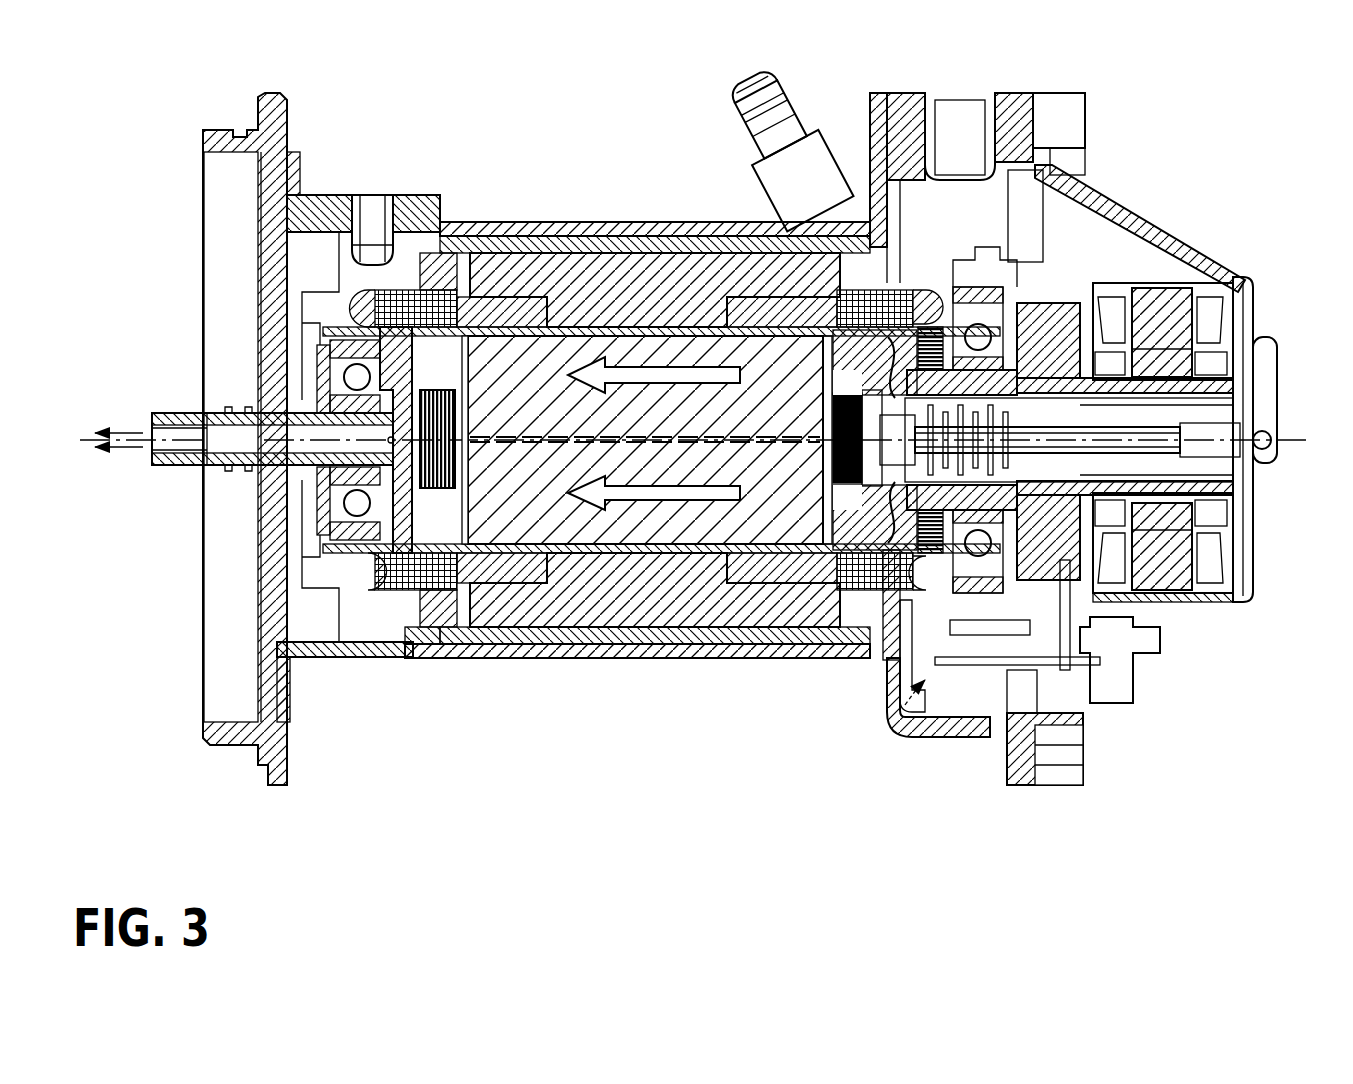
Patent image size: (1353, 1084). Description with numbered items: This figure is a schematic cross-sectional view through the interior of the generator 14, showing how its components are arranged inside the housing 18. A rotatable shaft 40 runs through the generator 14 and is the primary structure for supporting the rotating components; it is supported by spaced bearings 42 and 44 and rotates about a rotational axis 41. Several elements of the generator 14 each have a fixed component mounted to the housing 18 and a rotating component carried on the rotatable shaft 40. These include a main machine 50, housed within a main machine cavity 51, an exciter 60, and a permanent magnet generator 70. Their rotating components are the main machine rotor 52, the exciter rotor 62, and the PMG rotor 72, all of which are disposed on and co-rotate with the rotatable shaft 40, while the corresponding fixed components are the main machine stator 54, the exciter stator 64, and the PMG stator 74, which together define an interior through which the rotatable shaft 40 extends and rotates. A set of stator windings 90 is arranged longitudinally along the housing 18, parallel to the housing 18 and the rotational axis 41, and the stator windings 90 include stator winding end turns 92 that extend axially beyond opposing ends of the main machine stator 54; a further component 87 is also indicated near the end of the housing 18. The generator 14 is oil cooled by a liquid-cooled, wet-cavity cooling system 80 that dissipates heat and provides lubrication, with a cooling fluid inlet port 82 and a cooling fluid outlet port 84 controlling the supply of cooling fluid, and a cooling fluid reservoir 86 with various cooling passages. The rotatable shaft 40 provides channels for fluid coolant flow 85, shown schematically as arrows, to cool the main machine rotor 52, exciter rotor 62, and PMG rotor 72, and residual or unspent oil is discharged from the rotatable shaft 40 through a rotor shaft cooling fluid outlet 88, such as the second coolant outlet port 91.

The generator 14 is at (472, 100).
The housing 18 is at (492, 230).
The rotatable shaft 40 is at (233, 485).
The rotational axis 41 is at (1285, 455).
The bearing 42 is at (968, 520).
The bearing 44 is at (350, 385).
The main machine 50 is at (577, 172).
The main machine cavity 51 is at (425, 270).
The main machine rotor 52 is at (500, 528).
The main machine stator 54 is at (597, 500).
The exciter 60 is at (1167, 278).
The exciter rotor 62 is at (1232, 525).
The exciter stator 64 is at (1172, 578).
The permanent magnet generator 70 is at (1078, 278).
The PMG rotor 72 is at (1060, 560).
The PMG stator 74 is at (1050, 565).
The cooling system 80 is at (300, 270).
The cooling fluid inlet port 82 is at (373, 205).
The cooling fluid outlet port 84 is at (748, 118).
The fluid coolant flow 85 is at (607, 493).
The cooling fluid reservoir 86 is at (903, 706).
The end wall 87 is at (850, 310).
The rotor shaft cooling fluid outlet 88 is at (126, 431).
The stator windings 90 is at (745, 300).
The second coolant outlet port 91 is at (137, 412).
The stator winding end turns 92 is at (863, 283).